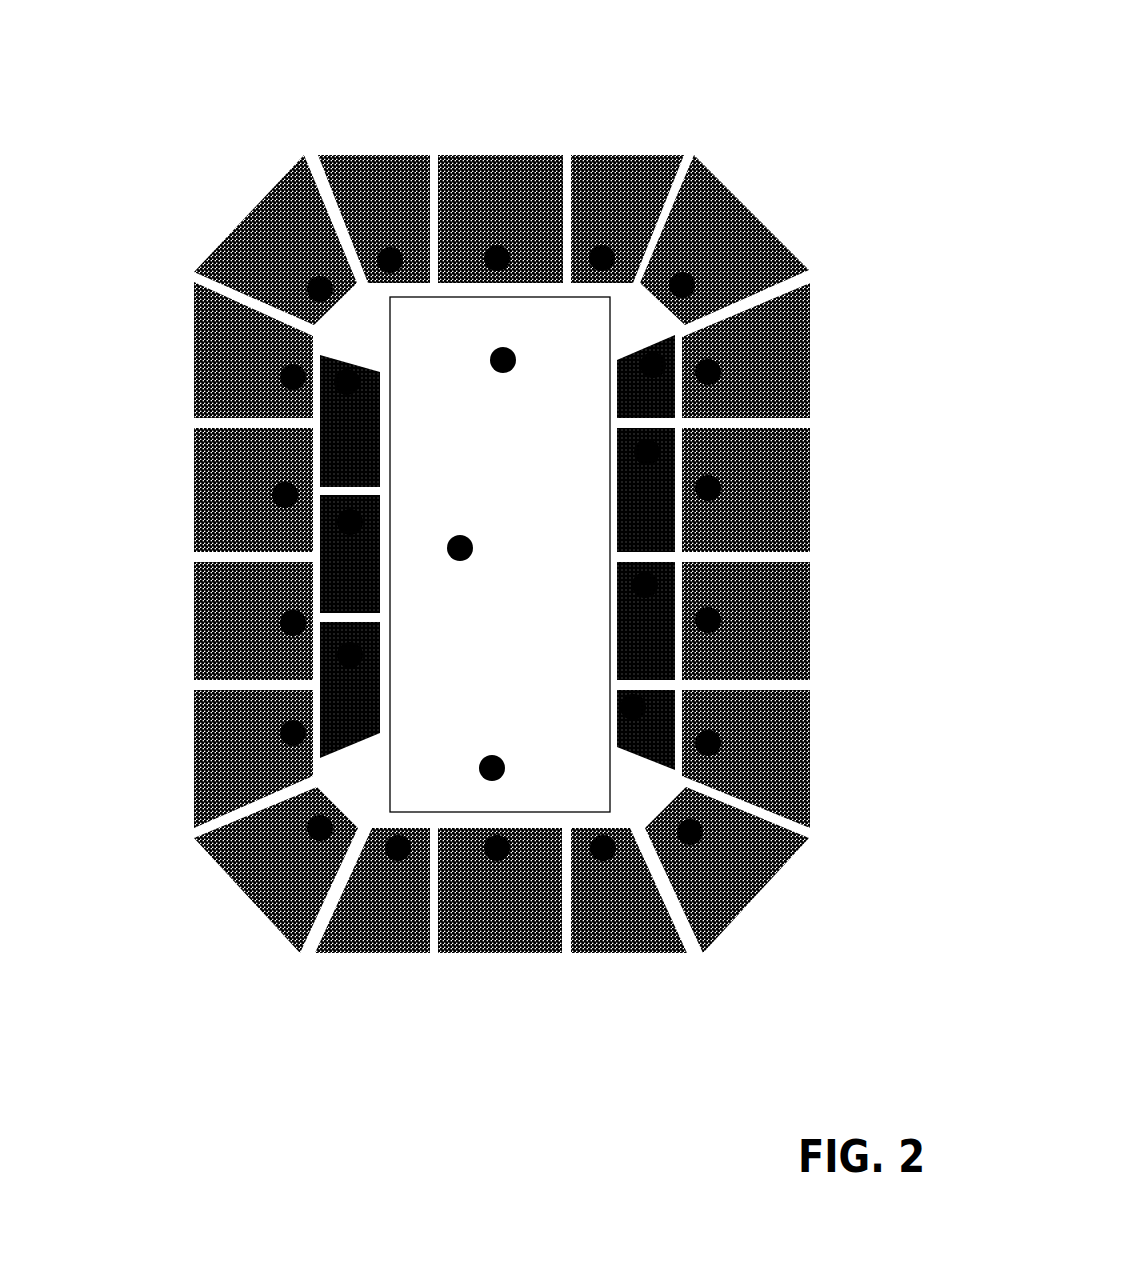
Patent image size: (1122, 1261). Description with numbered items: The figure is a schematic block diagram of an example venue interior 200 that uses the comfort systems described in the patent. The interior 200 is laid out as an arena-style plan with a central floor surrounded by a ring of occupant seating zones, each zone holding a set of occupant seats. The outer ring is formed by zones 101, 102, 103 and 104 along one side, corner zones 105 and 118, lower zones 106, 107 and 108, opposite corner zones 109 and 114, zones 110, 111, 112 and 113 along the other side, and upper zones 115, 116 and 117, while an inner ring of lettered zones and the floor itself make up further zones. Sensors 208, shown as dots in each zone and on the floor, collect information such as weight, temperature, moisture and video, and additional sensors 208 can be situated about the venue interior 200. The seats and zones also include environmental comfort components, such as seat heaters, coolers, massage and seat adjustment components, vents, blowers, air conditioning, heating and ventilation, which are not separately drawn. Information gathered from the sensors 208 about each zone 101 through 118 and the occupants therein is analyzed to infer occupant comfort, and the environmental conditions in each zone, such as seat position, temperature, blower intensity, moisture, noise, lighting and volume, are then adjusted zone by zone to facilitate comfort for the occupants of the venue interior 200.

The venue interior 200 is at (818, 124).
The sensors 208 is at (602, 258).
The zone 101 is at (253, 350).
The zone 102 is at (253, 490).
The zone 103 is at (253, 621).
The zone 104 is at (253, 759).
The zone 105 is at (276, 870).
The zone 106 is at (372, 890).
The zone 107 is at (500, 890).
The zone 108 is at (629, 890).
The zone 109 is at (727, 870).
The zone 110 is at (746, 759).
The zone 111 is at (746, 621).
The zone 112 is at (746, 490).
The zone 113 is at (746, 350).
The zone 114 is at (724, 240).
The zone 115 is at (627, 219).
The zone 116 is at (500, 219).
The zone 117 is at (374, 219).
The zone 118 is at (275, 240).